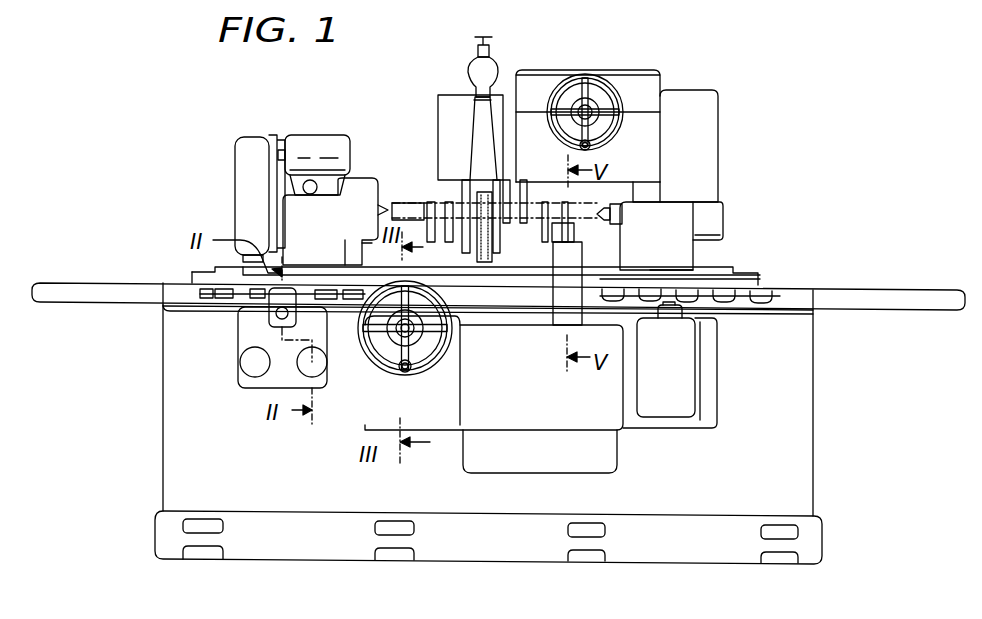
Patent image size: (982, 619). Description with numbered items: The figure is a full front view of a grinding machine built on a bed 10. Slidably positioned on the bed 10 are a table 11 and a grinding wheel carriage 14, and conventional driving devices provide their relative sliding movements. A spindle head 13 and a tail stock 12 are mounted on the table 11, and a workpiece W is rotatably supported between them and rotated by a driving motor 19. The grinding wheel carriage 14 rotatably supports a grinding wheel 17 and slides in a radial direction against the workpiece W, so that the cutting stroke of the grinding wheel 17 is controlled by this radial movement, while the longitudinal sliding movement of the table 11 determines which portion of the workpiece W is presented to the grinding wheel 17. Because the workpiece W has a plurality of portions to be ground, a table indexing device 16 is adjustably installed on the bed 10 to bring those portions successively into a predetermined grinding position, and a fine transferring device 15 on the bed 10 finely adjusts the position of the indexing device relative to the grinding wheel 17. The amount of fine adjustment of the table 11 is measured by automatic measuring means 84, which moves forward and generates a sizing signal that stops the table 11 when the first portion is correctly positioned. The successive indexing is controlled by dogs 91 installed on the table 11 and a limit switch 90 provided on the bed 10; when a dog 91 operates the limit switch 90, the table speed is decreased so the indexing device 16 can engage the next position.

The bed 10 is at (782, 413).
The table 11 is at (712, 276).
The tail stock 12 is at (672, 213).
The spindle head 13 is at (330, 222).
The grinding wheel carriage 14 is at (638, 93).
The fine transferring device 15 is at (386, 372).
The table indexing device 16 is at (231, 340).
The grinding wheel 17 is at (478, 207).
The driving motor 19 is at (306, 144).
The automatic measuring means 84 is at (588, 248).
The limit switch 90 is at (668, 316).
The dogs 91 is at (760, 293).
The workpiece W is at (600, 200).